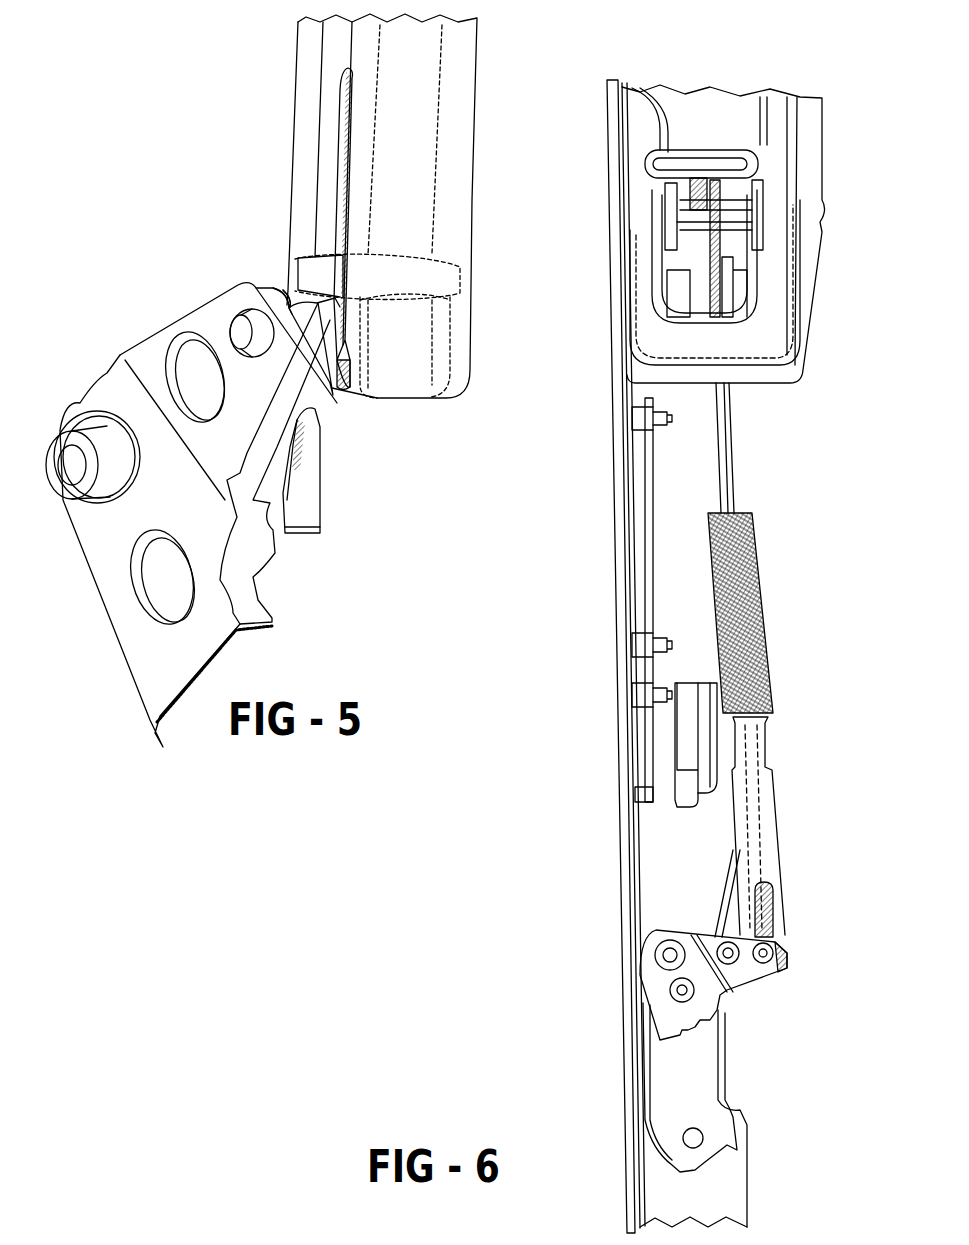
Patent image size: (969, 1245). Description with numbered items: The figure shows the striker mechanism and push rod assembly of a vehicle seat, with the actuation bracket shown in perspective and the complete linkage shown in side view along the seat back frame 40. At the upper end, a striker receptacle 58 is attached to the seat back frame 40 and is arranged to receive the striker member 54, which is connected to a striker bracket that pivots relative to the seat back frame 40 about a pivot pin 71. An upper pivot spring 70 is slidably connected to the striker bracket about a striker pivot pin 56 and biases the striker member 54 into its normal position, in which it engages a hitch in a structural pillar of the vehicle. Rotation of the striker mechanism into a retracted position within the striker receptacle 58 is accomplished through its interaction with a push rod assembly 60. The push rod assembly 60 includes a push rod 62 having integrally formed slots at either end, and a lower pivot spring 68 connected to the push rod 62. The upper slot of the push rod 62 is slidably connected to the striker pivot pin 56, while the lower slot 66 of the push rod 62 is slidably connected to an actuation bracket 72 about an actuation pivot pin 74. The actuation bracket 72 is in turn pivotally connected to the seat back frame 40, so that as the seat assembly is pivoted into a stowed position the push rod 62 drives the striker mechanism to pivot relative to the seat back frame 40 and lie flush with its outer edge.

In FIG. 6, the seat back frame 40 is at (610, 410).
In FIG. 6, the striker member 54 is at (723, 150).
In FIG. 6, the striker pivot pin 56 is at (757, 213).
In FIG. 6, the striker receptacle 58 is at (738, 107).
In FIG. 5, the push rod assembly 60 is at (272, 88).
In FIG. 6, the push rod assembly 60 is at (762, 458).
In FIG. 5, the push rod 62 is at (470, 113).
In FIG. 6, the push rod 62 is at (740, 404).
In FIG. 5, the lower slot 66 is at (340, 157).
In FIG. 6, the lower slot 66 is at (773, 890).
In FIG. 6, the lower pivot spring 68 is at (765, 562).
In FIG. 6, the upper pivot spring 70 is at (670, 197).
In FIG. 6, the pivot pin 71 is at (760, 193).
In FIG. 5, the actuation bracket 72 is at (183, 300).
In FIG. 6, the actuation bracket 72 is at (727, 990).
In FIG. 5, the actuation pivot pin 74 is at (271, 275).
In FIG. 6, the actuation pivot pin 74 is at (790, 945).